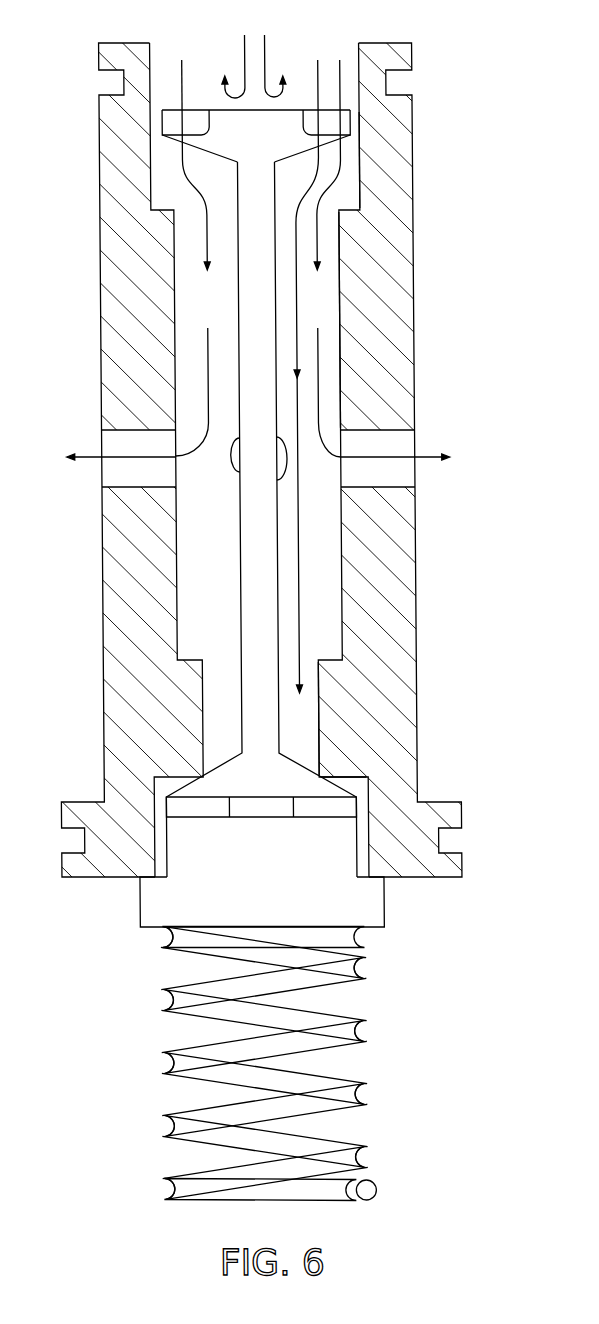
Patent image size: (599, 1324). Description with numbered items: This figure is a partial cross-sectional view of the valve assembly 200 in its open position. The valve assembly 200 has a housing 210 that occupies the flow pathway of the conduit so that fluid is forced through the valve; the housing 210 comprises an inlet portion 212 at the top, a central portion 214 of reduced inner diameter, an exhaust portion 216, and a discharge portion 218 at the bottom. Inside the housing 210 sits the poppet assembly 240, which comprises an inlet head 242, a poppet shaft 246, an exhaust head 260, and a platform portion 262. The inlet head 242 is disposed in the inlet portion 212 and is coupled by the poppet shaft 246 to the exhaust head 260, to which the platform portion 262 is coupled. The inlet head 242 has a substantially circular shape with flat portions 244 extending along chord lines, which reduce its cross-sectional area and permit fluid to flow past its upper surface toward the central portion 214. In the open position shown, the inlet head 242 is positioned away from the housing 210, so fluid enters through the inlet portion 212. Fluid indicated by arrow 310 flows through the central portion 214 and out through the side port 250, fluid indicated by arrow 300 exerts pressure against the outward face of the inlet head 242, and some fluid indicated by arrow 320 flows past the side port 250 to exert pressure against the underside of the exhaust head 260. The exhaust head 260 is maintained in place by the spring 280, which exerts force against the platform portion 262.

The valve assembly 200 is at (450, 80).
The housing 210 is at (411, 352).
The inlet portion 212 is at (347, 185).
The central portion 214 is at (326, 265).
The exhaust portion 216 is at (309, 690).
The discharge portion 218 is at (357, 788).
The poppet assembly 240 is at (183, 560).
The inlet head 242 is at (228, 132).
The flat portions 244 is at (358, 120).
The poppet shaft 246 is at (248, 295).
The side port 250 is at (98, 446).
The exhaust head 260 is at (240, 780).
The platform portion 262 is at (372, 905).
The spring 280 is at (366, 1034).
The arrow 300 is at (265, 40).
The arrow 310 is at (322, 233).
The arrow 320 is at (294, 620).